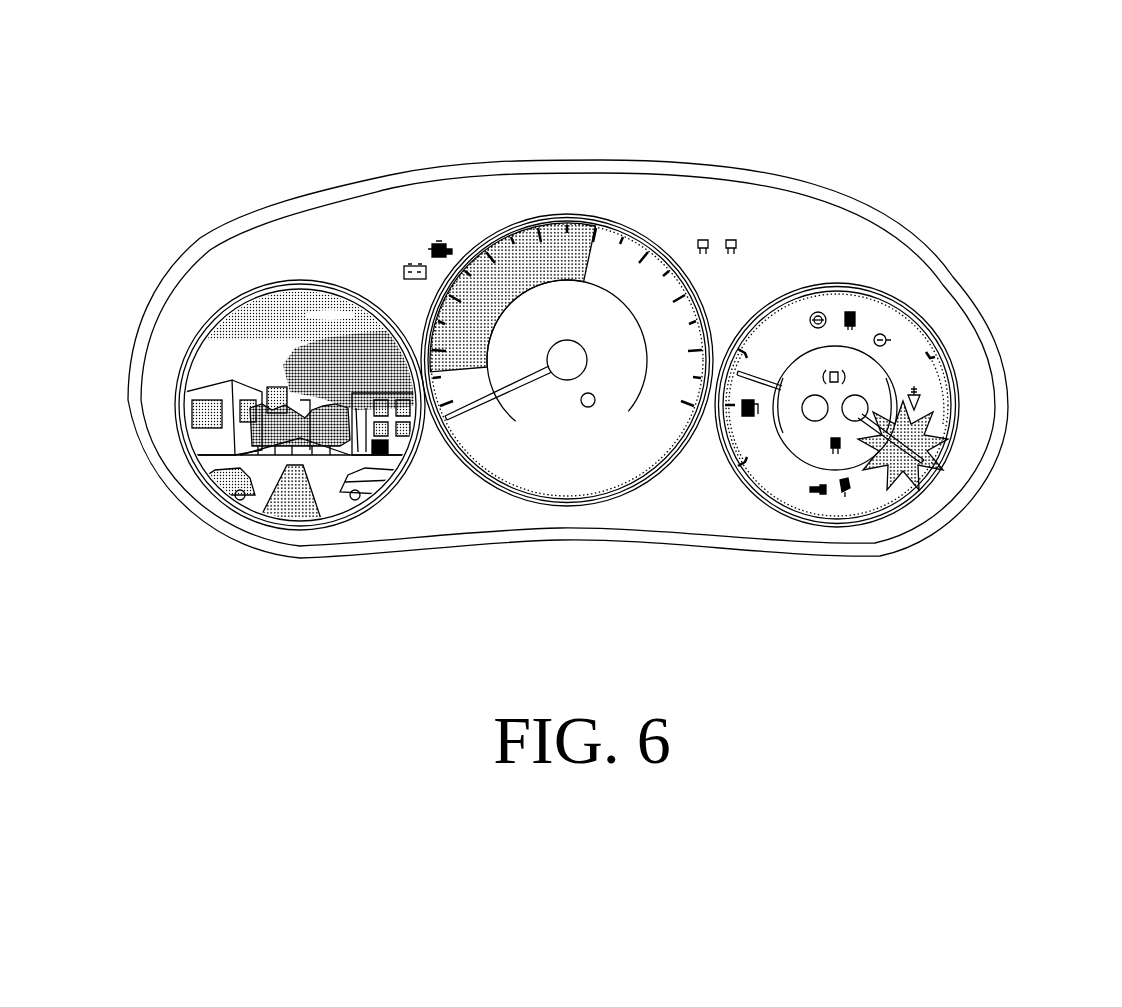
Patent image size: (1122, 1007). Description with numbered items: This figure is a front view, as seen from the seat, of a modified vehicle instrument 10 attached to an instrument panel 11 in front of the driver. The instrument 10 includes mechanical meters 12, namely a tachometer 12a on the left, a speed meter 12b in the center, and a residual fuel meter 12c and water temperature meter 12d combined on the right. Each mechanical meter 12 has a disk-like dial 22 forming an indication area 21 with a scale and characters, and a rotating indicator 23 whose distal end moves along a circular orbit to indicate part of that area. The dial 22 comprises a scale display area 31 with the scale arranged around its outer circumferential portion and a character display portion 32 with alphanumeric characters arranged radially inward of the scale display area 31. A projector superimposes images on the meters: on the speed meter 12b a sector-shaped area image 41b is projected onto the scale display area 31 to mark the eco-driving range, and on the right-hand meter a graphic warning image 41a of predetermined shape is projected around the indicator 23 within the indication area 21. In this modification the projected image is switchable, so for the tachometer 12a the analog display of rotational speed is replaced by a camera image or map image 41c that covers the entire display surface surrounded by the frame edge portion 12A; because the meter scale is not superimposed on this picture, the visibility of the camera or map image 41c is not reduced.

The vehicle instrument 10 is at (620, 307).
The instrument panel 11 is at (920, 213).
The mechanical meter 12 is at (583, 366).
The tachometer 12a is at (255, 323).
The frame edge portion 12A is at (255, 332).
The speed meter 12b is at (586, 351).
The residual fuel meter 12c is at (898, 372).
The water temperature meter 12d is at (898, 467).
The indication area 21 is at (657, 430).
The dial 22 is at (612, 473).
The indicator 23 is at (755, 370).
The scale display area 31 is at (460, 430).
The character display portion 32 is at (475, 415).
The graphic warning image 41a is at (950, 443).
The area image 41b is at (586, 355).
The map image 41c is at (230, 337).